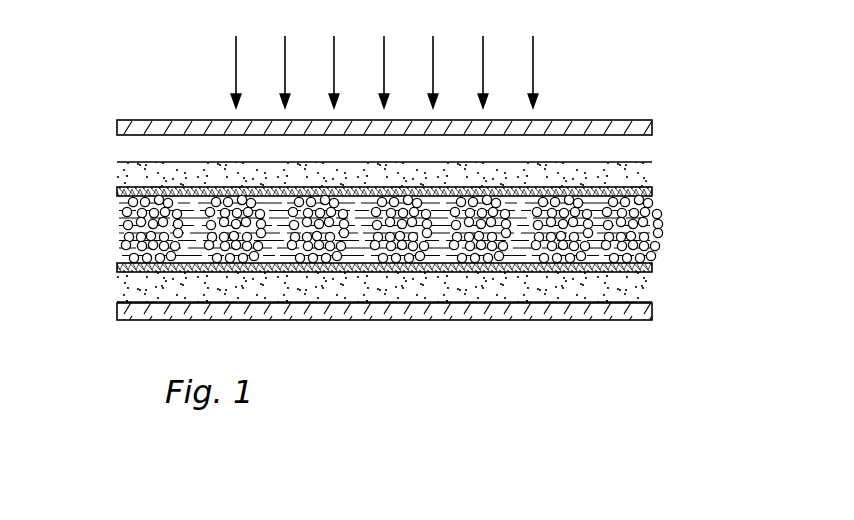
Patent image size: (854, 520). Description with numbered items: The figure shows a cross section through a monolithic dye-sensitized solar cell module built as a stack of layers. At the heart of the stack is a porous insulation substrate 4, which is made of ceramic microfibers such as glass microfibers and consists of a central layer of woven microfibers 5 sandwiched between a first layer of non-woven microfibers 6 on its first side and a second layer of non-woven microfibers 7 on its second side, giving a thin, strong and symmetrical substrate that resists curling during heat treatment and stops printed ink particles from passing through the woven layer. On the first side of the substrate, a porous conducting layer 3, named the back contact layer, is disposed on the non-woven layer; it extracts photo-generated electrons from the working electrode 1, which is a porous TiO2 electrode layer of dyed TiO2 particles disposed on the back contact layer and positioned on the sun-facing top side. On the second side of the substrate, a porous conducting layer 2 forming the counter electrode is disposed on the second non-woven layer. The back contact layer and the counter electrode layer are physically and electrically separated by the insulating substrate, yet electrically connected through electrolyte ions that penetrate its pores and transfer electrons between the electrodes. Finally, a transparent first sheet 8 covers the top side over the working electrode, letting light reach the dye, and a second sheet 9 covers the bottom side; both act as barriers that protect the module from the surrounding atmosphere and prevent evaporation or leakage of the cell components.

The working electrode 1 is at (640, 148).
The counter electrode 2 is at (638, 285).
The conducting layer 3 is at (640, 176).
The porous insulation substrate 4 is at (377, 224).
The layer of woven microfibers 5 is at (127, 232).
The first layer of non-woven microfibers 6 is at (125, 190).
The second layer of non-woven microfibers 7 is at (118, 268).
The first sheet 8 is at (130, 129).
The second sheet 9 is at (117, 312).